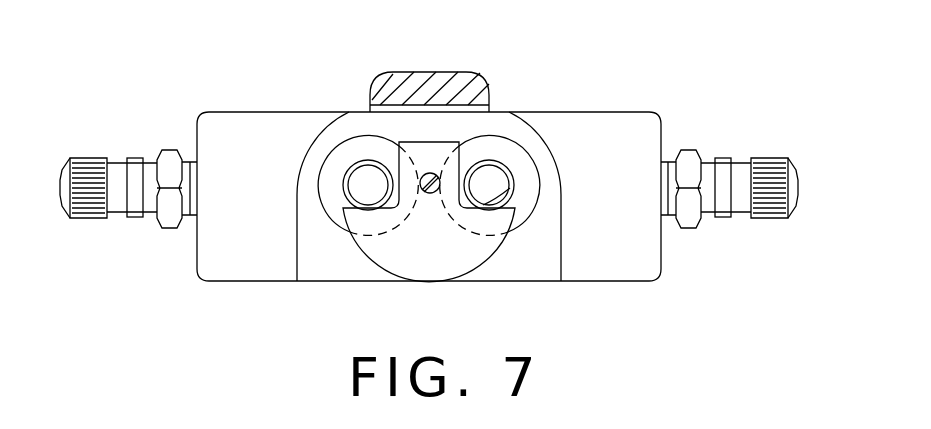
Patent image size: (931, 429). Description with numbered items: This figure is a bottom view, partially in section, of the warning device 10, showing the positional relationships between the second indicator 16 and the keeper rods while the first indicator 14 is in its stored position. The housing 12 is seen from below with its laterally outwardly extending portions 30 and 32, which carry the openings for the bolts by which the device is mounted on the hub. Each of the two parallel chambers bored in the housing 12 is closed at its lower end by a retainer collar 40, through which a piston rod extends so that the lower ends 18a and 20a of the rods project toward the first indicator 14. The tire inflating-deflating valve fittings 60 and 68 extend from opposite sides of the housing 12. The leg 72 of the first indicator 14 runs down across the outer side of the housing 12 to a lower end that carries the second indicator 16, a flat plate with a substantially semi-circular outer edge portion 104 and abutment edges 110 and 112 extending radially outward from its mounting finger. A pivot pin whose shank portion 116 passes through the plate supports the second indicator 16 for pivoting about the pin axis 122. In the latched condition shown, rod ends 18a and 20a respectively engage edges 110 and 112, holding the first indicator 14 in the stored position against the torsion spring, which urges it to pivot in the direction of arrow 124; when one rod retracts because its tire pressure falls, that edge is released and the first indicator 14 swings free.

The warning device 10 is at (612, 92).
The housing 12 is at (270, 100).
The first indicator 14 is at (492, 58).
The second indicator 16 is at (362, 294).
The lower end of rod 18 18a is at (492, 182).
The lower end of rod 20 20a is at (357, 180).
The laterally outwardly extending portion 30 is at (638, 122).
The laterally outwardly extending portion 32 is at (218, 127).
The retainer collar 40 is at (357, 145).
The fitting 60 is at (686, 158).
The tire inflating-deflating valve fitting 68 is at (172, 155).
The leg 72 is at (443, 87).
The semi-circular outer edge portion 104 is at (477, 270).
The abutment edge 110 is at (513, 185).
The abutment edge 112 is at (342, 193).
The shank portion 116 is at (437, 175).
The pin axis 122 is at (427, 194).
The arrow 124 is at (428, 63).